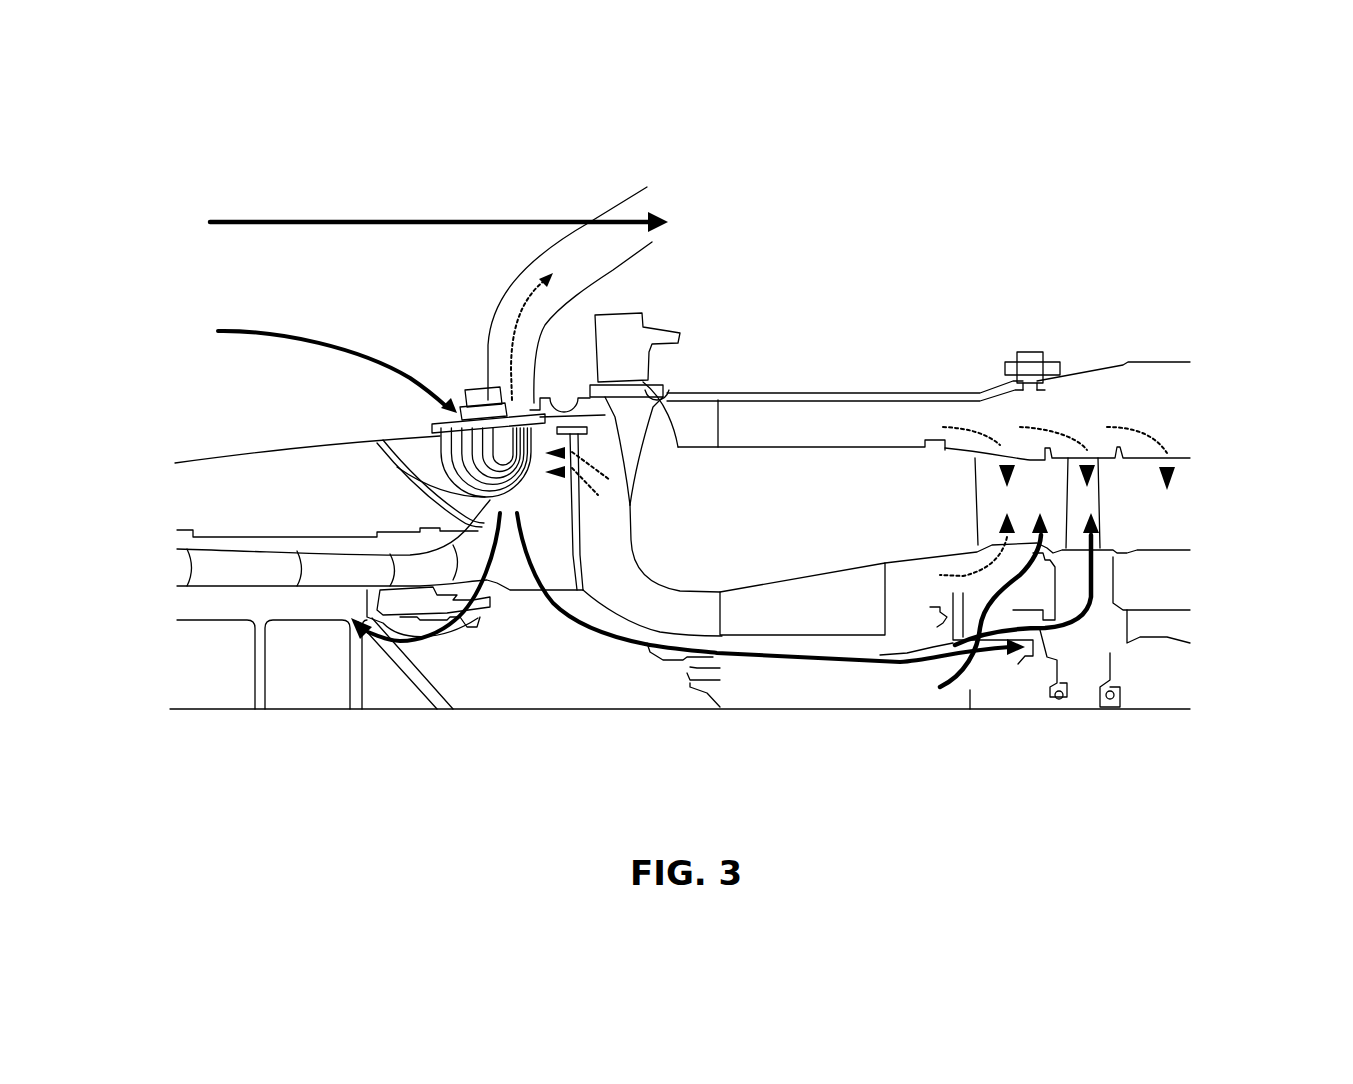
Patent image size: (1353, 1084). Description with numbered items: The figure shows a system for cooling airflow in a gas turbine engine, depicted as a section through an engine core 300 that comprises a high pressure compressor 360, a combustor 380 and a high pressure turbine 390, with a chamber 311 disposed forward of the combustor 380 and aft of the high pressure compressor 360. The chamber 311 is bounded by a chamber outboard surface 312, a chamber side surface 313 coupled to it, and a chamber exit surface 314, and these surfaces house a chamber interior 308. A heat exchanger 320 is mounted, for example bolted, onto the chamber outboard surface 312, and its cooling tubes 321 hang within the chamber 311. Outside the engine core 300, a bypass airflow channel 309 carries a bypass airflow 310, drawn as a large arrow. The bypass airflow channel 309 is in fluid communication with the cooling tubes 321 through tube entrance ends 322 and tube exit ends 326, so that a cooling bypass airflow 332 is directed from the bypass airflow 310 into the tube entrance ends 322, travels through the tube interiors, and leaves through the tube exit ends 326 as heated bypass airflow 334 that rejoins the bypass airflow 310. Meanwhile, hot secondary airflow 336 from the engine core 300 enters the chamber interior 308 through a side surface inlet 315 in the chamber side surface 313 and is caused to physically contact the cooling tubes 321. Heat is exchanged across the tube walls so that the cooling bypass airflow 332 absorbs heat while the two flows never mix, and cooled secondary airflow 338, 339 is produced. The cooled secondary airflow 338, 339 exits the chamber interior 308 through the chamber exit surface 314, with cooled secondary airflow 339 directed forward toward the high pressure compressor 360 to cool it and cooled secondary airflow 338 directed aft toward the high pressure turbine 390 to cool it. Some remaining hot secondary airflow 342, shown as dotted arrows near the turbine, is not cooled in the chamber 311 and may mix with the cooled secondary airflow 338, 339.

The engine core 300 is at (950, 245).
The chamber interior 308 is at (413, 453).
The bypass airflow channel 309 is at (180, 203).
The bypass airflow 310 is at (257, 218).
The chamber 311 is at (417, 485).
The chamber outboard surface 312 is at (420, 437).
The chamber side surface 313 is at (580, 455).
The chamber exit surface 314 is at (510, 500).
The side surface inlet 315 is at (595, 495).
The heat exchanger 320 is at (468, 388).
The cooling tubes 321 is at (473, 490).
The tube entrance ends 322 is at (377, 443).
The tube exit ends 326 is at (538, 403).
The cooling bypass airflow 332 is at (257, 327).
The heated bypass airflow 334 is at (507, 350).
The hot secondary airflow 336 is at (650, 460).
The cooled secondary airflow 338 is at (968, 670).
The cooled secondary airflow 339 is at (430, 638).
The hot secondary airflow 342 is at (997, 437).
The high pressure compressor 360 is at (237, 563).
The combustor 380 is at (817, 472).
The high pressure turbine 390 is at (1090, 507).